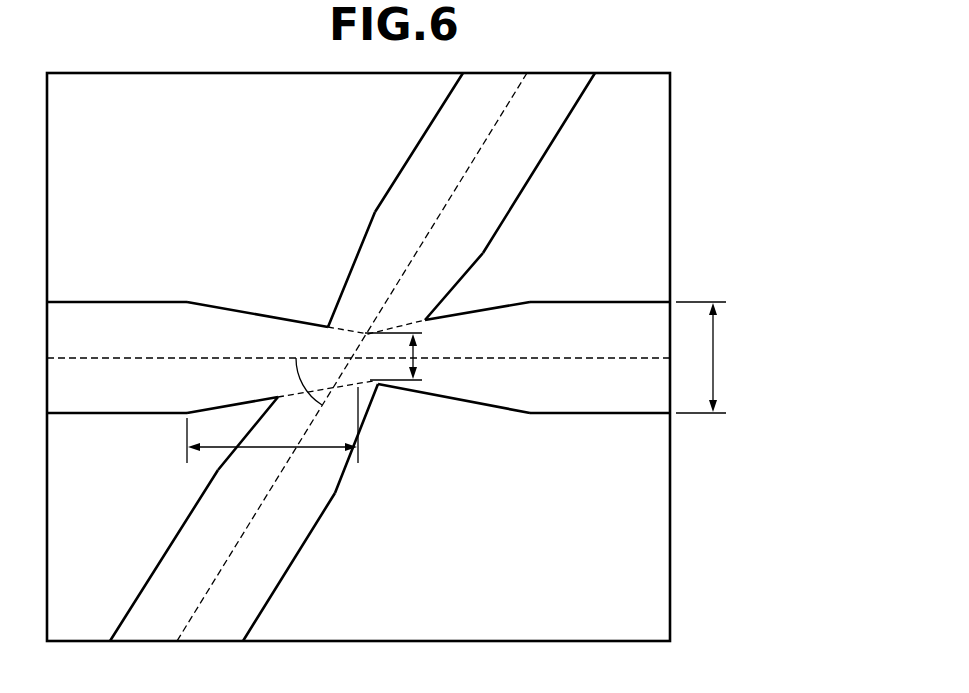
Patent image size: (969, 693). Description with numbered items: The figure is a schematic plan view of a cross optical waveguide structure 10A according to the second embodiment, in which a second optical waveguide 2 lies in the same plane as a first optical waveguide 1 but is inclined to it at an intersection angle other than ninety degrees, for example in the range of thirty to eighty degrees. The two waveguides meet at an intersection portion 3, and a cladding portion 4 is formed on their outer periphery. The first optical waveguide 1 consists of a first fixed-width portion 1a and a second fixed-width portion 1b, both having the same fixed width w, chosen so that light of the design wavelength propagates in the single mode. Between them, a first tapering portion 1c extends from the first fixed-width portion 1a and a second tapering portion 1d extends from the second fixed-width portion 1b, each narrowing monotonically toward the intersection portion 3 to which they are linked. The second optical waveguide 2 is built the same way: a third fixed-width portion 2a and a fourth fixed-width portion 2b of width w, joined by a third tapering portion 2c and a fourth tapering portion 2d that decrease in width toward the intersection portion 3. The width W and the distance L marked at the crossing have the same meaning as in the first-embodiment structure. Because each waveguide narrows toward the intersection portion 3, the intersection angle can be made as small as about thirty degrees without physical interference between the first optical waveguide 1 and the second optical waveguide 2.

The cross optical waveguide structure 10A is at (769, 122).
The first optical waveguide 1 is at (633, 273).
The first fixed-width portion 1a is at (583, 413).
The second fixed-width portion 1b is at (128, 302).
The first tapering portion 1c is at (463, 401).
The second tapering portion 1d is at (248, 313).
The second optical waveguide 2 is at (543, 188).
The third fixed-width portion 2a is at (557, 138).
The fourth fixed-width portion 2b is at (266, 607).
The third tapering portion 2c is at (475, 265).
The fourth tapering portion 2d is at (340, 486).
The intersection portion 3 is at (322, 305).
The cladding portion 4 is at (671, 230).
The width W is at (417, 351).
The width w is at (704, 357).
The distance L is at (210, 450).